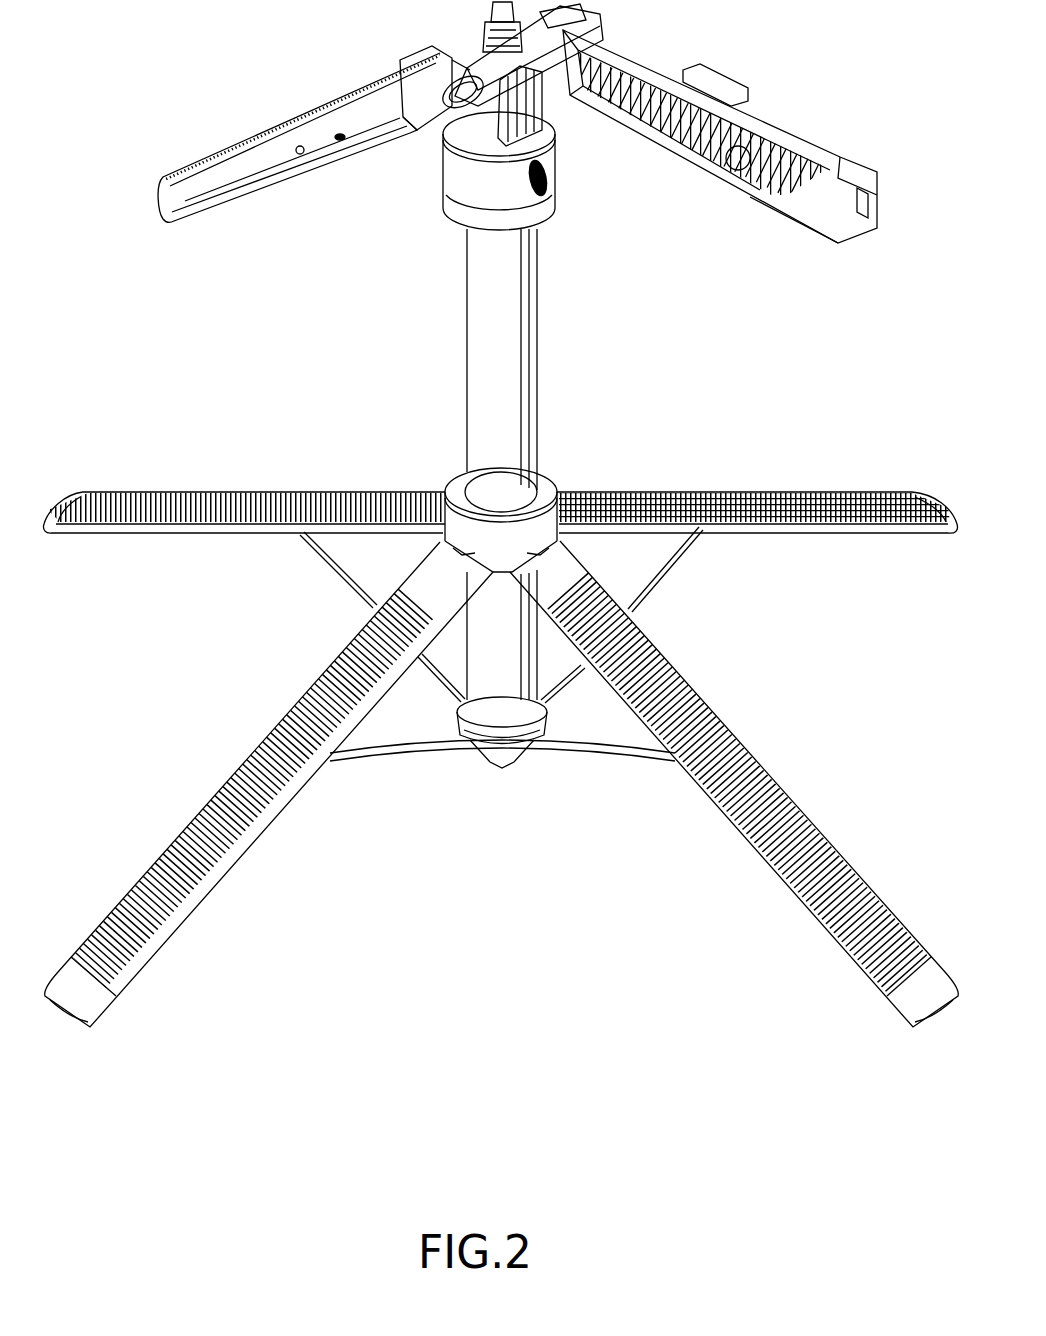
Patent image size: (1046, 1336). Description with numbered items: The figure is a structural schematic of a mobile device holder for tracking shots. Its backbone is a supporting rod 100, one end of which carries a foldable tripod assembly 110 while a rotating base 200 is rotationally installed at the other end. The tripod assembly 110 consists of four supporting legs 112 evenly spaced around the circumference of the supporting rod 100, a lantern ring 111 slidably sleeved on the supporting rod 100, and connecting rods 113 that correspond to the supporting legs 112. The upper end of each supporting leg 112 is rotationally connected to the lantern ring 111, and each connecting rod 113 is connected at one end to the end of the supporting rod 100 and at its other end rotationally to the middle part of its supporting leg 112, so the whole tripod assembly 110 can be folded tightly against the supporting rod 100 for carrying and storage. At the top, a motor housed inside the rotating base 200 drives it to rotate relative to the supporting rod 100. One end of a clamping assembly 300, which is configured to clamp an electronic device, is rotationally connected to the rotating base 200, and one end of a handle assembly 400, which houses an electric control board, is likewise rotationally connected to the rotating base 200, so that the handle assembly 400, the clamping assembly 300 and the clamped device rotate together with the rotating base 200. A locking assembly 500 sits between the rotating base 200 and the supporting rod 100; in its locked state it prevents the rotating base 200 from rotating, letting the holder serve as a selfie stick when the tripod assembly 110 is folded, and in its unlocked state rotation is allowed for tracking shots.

The supporting rod 100 is at (487, 345).
The tripod assembly 110 is at (628, 450).
The lantern ring 111 is at (550, 477).
The supporting leg 112 is at (272, 832).
The connecting rod 113 is at (400, 760).
The rotating base 200 is at (460, 173).
The clamping assembly 300 is at (703, 77).
The handle assembly 400 is at (300, 108).
The locking assembly 500 is at (563, 178).